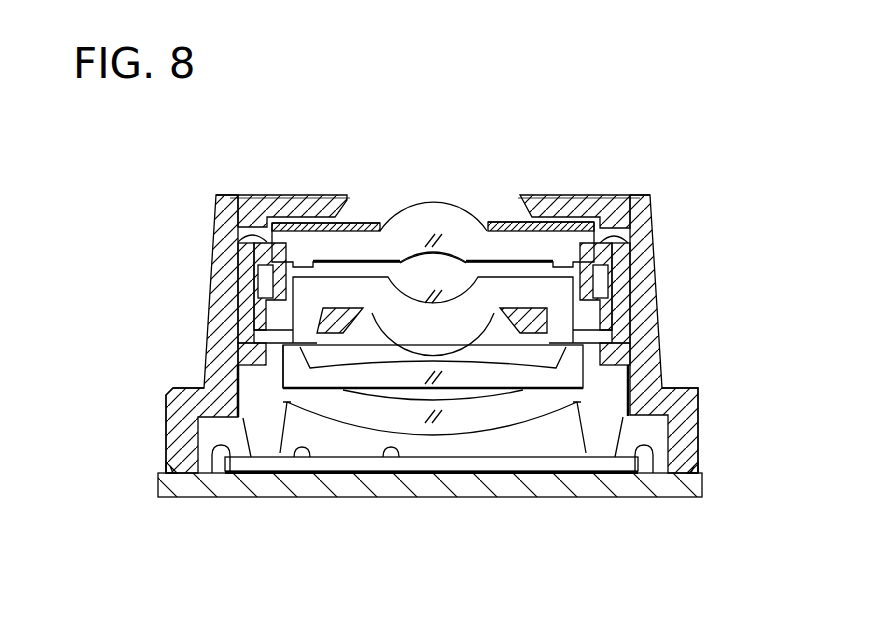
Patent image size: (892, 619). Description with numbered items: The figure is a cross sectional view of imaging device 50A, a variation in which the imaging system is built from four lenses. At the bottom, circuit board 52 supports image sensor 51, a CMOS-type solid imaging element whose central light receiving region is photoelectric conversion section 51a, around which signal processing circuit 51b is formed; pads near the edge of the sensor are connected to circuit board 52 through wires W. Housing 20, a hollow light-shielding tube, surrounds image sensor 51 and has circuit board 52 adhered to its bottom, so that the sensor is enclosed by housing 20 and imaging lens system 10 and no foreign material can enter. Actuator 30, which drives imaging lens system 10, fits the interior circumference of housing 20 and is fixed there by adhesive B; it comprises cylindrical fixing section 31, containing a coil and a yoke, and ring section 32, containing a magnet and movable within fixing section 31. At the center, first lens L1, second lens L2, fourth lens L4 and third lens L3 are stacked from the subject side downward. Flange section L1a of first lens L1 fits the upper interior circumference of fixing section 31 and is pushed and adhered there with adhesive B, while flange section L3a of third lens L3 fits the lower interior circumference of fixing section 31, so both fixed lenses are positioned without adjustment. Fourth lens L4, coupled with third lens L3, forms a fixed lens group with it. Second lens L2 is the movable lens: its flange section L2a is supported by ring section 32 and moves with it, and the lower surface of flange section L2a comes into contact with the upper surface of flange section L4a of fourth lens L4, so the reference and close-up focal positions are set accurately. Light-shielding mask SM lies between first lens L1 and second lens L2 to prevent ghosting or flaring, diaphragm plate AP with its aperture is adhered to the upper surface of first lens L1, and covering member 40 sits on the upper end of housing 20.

The imaging lens system 10 is at (376, 174).
The housing 20 is at (698, 389).
The actuator 30 is at (640, 312).
The fixing section 31 is at (620, 286).
The ring section 32 is at (598, 327).
The covering member 40 is at (343, 194).
The imaging device 50A is at (679, 188).
The image sensor 51 is at (513, 462).
The photoelectric conversion section 51a is at (383, 450).
The signal processing circuit 51b is at (295, 450).
The circuit board 52 is at (588, 465).
The diaphragm plate AP is at (491, 224).
The adhesive B is at (607, 243).
The first lens L1 is at (453, 201).
The flange section L1a is at (578, 237).
The second lens L2 is at (481, 324).
The flange section L2a is at (256, 337).
The third lens L3 is at (455, 436).
The flange section L3a is at (256, 385).
The fourth lens L4 is at (383, 378).
The flange section L4a is at (628, 376).
The light-shielding mask SM is at (408, 252).
The wires W is at (213, 455).